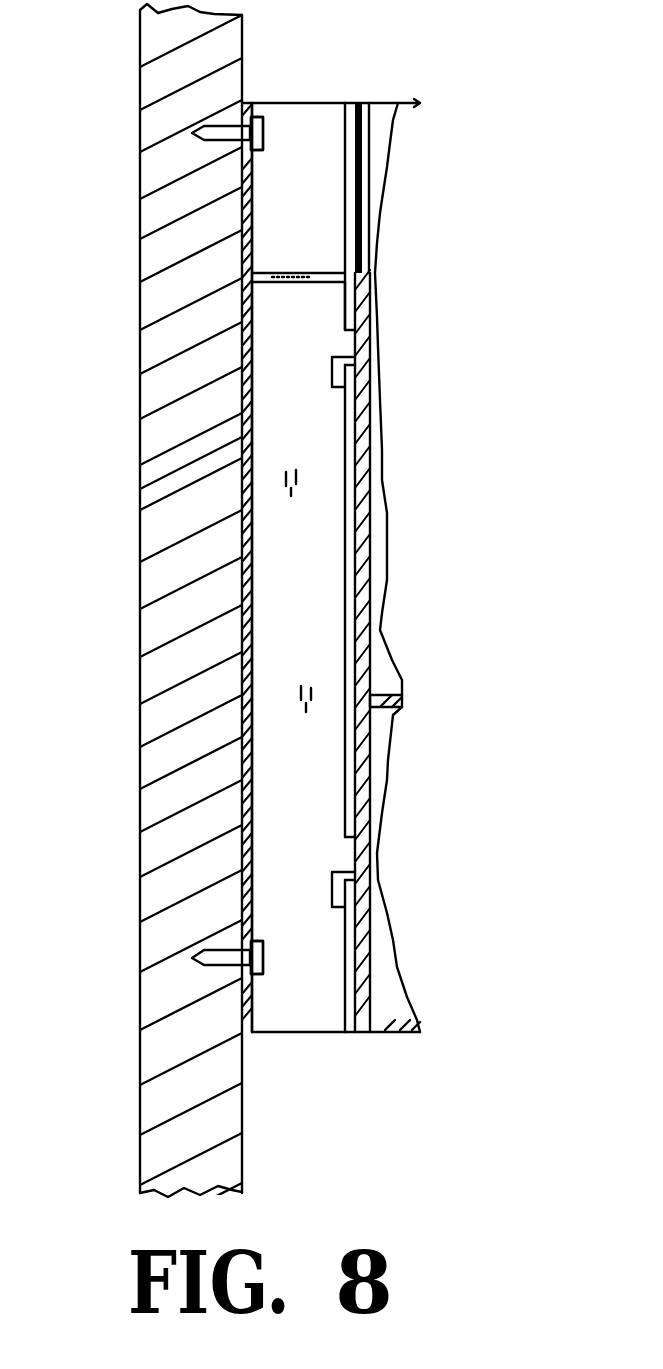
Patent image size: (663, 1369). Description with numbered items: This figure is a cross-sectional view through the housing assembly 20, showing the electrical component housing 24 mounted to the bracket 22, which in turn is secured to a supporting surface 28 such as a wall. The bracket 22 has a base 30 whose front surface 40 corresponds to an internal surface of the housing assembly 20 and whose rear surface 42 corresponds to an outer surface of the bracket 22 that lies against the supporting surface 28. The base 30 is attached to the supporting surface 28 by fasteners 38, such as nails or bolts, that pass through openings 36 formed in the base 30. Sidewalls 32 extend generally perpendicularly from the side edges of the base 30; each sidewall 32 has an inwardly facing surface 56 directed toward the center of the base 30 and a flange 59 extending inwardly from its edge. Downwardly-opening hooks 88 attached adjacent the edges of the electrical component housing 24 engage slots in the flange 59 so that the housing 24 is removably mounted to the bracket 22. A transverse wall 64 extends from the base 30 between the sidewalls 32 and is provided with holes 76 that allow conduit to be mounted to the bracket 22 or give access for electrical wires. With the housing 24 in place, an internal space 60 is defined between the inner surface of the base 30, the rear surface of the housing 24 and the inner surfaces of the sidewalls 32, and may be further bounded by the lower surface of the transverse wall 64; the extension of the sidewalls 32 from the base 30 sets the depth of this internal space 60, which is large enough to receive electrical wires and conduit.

The housing assembly 20 is at (450, 156).
The bracket 22 is at (321, 577).
The electrical component housing 24 is at (405, 1050).
The supporting surface 28 is at (197, 619).
The base 30 is at (140, 203).
The sidewalls 32 is at (302, 125).
The openings 36 is at (240, 978).
The fasteners 38 is at (265, 135).
The front surface 40 is at (272, 102).
The rear surface 42 is at (232, 721).
The inwardly facing surface 56 is at (325, 137).
The flange 59 is at (345, 955).
The internal space 60 is at (328, 597).
The transverse wall 64 is at (335, 290).
The holes 76 is at (307, 245).
The hooks 88 is at (335, 370).